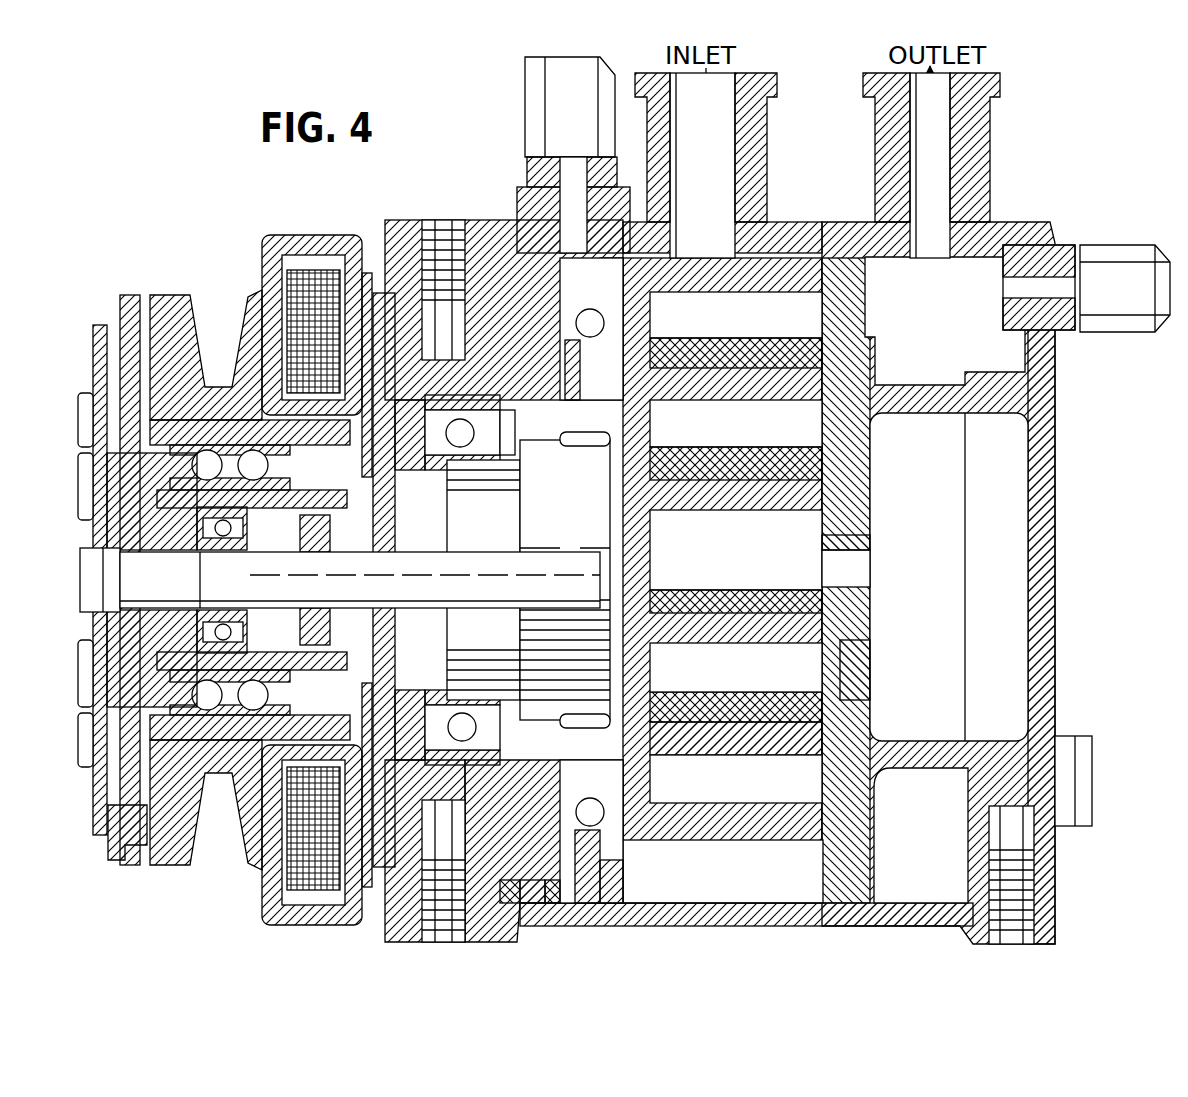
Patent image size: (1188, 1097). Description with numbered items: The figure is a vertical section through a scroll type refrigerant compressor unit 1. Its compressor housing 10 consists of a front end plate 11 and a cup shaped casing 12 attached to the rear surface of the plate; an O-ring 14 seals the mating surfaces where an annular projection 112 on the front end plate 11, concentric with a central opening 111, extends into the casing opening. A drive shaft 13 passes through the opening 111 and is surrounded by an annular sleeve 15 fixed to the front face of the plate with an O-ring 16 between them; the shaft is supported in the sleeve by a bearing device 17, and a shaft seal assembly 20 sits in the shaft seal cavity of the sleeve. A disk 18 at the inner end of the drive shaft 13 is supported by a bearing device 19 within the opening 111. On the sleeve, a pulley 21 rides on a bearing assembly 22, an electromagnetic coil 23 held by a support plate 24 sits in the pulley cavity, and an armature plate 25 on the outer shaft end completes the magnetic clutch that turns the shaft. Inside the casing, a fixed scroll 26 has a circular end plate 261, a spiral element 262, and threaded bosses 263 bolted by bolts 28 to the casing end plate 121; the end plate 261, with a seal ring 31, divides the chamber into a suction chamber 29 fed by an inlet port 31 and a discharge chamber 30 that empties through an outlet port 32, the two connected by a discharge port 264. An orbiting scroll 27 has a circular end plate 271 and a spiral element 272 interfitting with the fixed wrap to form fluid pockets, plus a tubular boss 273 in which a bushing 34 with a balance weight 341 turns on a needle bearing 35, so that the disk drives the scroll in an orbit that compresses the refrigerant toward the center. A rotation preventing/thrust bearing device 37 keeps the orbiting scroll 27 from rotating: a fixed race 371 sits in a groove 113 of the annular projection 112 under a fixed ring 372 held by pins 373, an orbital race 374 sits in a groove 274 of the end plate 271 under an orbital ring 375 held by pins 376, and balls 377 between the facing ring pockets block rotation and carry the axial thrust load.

The compressor unit 1 is at (745, 930).
The compressor housing 10 is at (405, 220).
The front end plate 11 is at (400, 942).
The cup shaped casing 12 is at (1058, 520).
The end plate 121 is at (1048, 604).
The drive shaft 13 is at (340, 580).
The O-ring 14 is at (535, 237).
The annular sleeve 15 is at (262, 800).
The O-ring 16 is at (392, 780).
The bearing device 17 is at (190, 650).
The disk 18 is at (483, 580).
The bearing device 19 is at (428, 460).
The shaft seal assembly 20 is at (300, 537).
The pulley 21 is at (300, 245).
The bearing assembly 22 is at (165, 693).
The electromagnetic coil 23 is at (312, 262).
The support plate 24 is at (376, 268).
The armature plate 25 is at (130, 845).
The fixed scroll 26 is at (880, 458).
The circular end plate 261 is at (858, 690).
The spiral element 262 is at (800, 590).
The internally threaded bosses 263 is at (900, 805).
The discharge port 264 is at (850, 568).
The orbiting scroll 27 is at (658, 531).
The circular end plate 271 is at (648, 668).
The spiral element 272 is at (775, 758).
The tubular boss 273 is at (640, 420).
The groove 274 is at (648, 782).
The bolts 28 is at (1065, 815).
The suction chamber 29 is at (722, 580).
The discharge chamber 30 is at (949, 577).
The inlet port 31 is at (740, 168).
The outlet port 32 is at (950, 168).
The bushing 34 is at (600, 583).
The balance weight 341 is at (565, 790).
The needle bearing 35 is at (583, 447).
The rotation preventing/thrust bearing device 37 is at (610, 852).
The fixed race 371 is at (445, 900).
The fixed ring 372 is at (600, 900).
The pins 373 is at (560, 905).
The orbital race 374 is at (636, 804).
The orbital ring 375 is at (612, 842).
The pins 376 is at (632, 340).
The balls 377 is at (640, 318).
The opening 111 is at (498, 430).
The annular projection 112 is at (545, 905).
The groove 113 is at (520, 905).